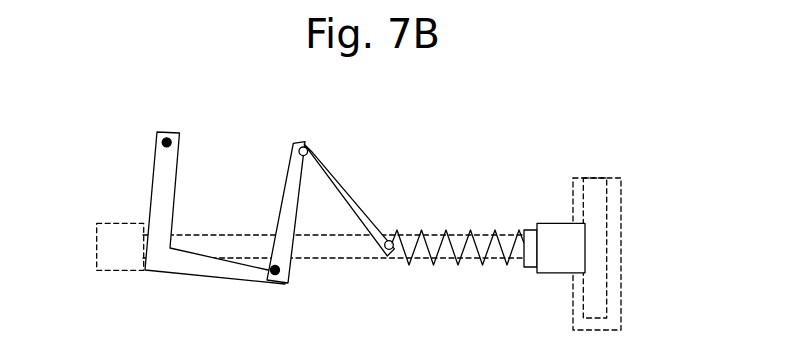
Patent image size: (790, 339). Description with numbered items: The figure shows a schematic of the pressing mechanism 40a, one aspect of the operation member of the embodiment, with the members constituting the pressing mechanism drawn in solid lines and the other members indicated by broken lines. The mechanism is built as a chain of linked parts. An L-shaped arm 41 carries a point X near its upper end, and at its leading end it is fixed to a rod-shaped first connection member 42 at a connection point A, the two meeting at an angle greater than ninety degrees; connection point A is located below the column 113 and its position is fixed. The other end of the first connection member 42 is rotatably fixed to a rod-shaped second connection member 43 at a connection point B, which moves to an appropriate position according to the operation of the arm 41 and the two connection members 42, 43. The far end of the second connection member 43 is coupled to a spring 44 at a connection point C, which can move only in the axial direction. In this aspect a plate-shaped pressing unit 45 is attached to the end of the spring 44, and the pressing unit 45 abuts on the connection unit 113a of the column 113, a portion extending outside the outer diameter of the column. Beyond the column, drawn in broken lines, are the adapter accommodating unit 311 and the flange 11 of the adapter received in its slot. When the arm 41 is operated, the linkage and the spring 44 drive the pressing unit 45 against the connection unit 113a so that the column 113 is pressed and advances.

The pressing mechanism 40a is at (443, 121).
The arm 41 is at (180, 150).
The first connection member 42 is at (278, 218).
The second connection member 43 is at (333, 175).
The spring 44 is at (422, 228).
The pressing unit 45 is at (530, 230).
The column 113 is at (323, 258).
The connection unit 113a is at (562, 222).
The flange 11 is at (595, 177).
The adapter accommodating unit 311 is at (621, 212).
The pivot point X is at (162, 132).
The connection point A is at (283, 283).
The connection point B is at (307, 148).
The connection point C is at (393, 252).